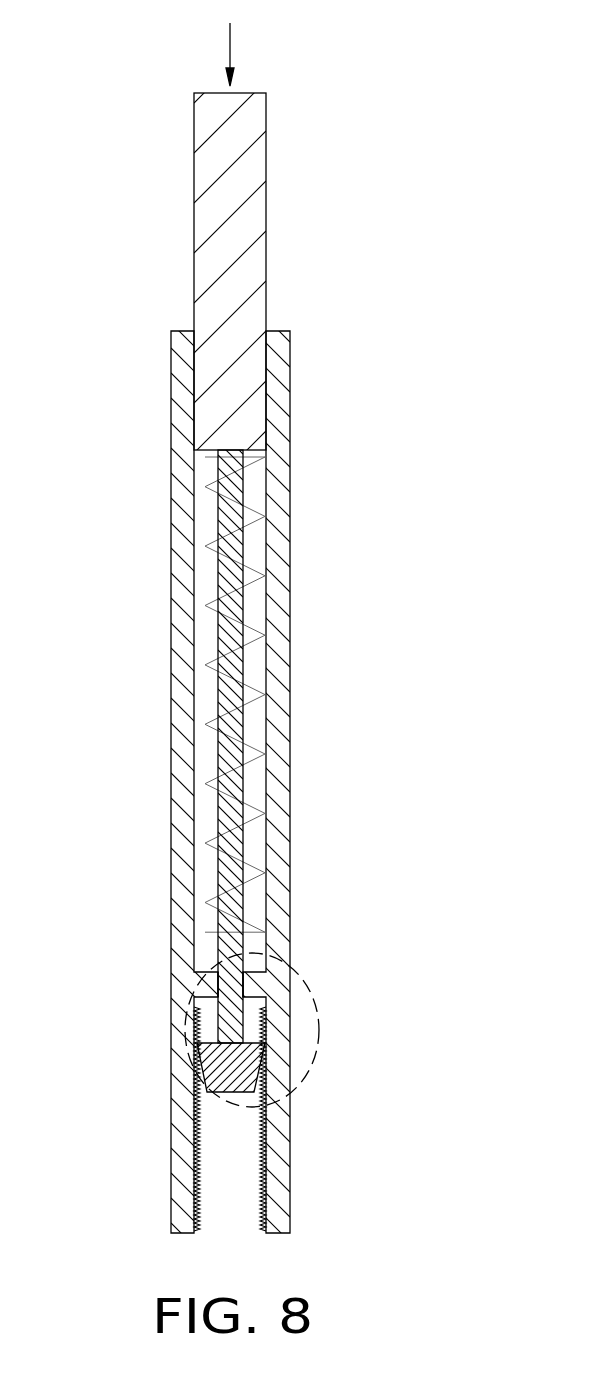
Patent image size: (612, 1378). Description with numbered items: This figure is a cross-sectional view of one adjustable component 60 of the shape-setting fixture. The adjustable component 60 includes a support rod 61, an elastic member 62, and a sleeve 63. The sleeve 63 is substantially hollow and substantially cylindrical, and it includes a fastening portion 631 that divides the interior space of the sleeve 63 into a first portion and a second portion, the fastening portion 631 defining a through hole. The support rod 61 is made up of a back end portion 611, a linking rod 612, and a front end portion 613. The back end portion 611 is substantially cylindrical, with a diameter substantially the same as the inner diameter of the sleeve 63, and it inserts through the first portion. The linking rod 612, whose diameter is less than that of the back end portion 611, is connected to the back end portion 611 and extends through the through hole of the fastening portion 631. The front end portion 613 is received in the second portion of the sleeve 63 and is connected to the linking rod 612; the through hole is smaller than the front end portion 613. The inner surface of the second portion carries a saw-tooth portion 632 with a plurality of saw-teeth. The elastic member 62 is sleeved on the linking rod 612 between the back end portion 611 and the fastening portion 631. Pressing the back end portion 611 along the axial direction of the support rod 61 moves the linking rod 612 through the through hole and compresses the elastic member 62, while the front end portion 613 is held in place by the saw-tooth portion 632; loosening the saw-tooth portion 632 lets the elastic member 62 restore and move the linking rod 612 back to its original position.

The adjustable component 60 is at (415, 42).
The support rod 61 is at (83, 218).
The back end portion 611 is at (212, 245).
The linking rod 612 is at (235, 641).
The front end portion 613 is at (230, 1073).
The elastic member 62 is at (250, 508).
The sleeve 63 is at (277, 390).
The fastening portion 631 is at (248, 987).
The saw-tooth portion 632 is at (197, 1150).